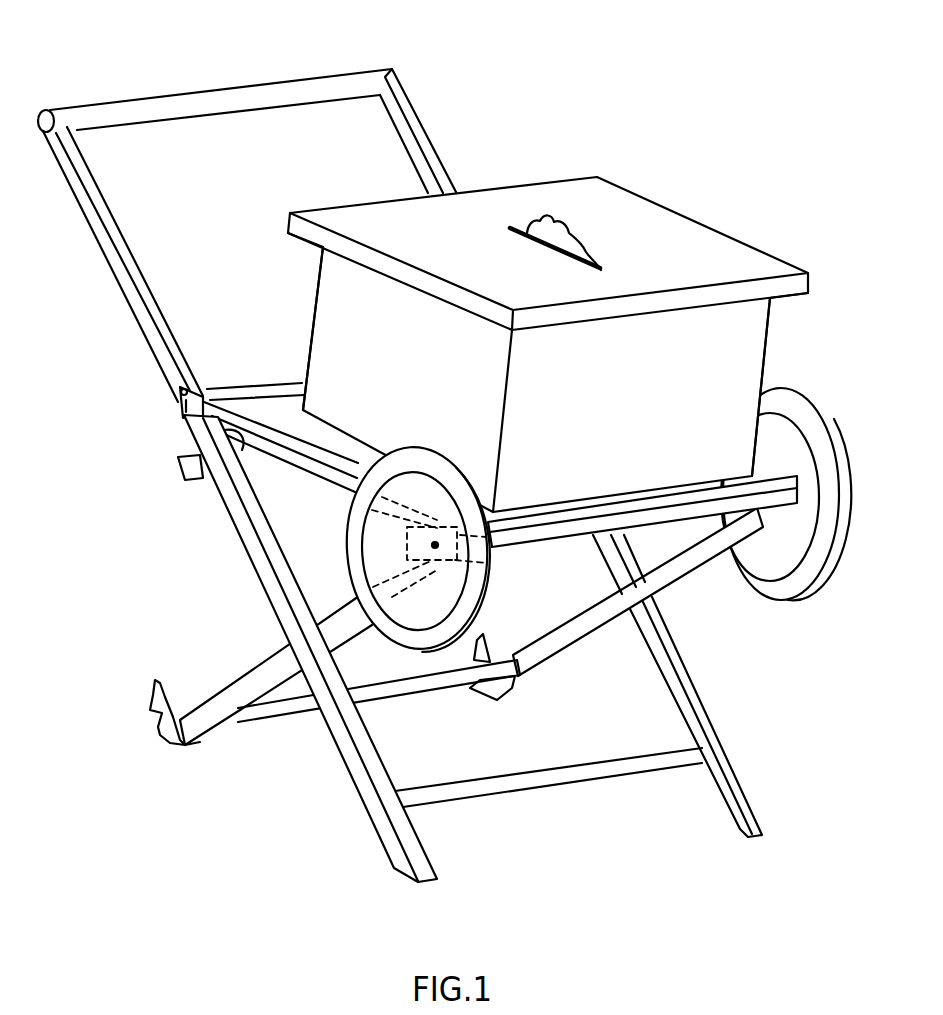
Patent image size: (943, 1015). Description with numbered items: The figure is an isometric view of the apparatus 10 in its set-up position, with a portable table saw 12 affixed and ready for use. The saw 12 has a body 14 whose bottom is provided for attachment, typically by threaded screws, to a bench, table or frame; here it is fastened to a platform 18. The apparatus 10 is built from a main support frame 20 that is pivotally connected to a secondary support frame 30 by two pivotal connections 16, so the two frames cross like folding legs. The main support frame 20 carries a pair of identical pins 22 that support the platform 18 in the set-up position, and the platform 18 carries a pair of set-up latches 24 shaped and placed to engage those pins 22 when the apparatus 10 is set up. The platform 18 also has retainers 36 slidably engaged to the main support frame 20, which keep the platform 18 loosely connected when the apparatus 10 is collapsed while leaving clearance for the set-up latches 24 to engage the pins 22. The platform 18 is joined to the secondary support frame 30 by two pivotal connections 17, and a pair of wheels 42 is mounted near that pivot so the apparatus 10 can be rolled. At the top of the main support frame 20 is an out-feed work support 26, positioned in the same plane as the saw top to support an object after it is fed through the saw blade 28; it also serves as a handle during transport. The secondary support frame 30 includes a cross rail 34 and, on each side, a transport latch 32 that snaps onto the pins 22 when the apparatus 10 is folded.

The apparatus 10 is at (100, 537).
The portable table saw 12 is at (582, 290).
The body 14 is at (768, 330).
The pivotal connections 16 is at (292, 643).
The pivotal connections 17 is at (433, 545).
The platform 18 is at (763, 457).
The main support frame 20 is at (260, 592).
The pins 22 is at (178, 405).
The set-up latches 24 is at (178, 392).
The out-feed work support 26 is at (200, 88).
The saw blade 28 is at (547, 220).
The secondary support frame 30 is at (216, 740).
The transport latches 32 is at (153, 692).
The cross rail 34 is at (427, 693).
The retainers 36 is at (178, 465).
The wheels 42 is at (792, 604).